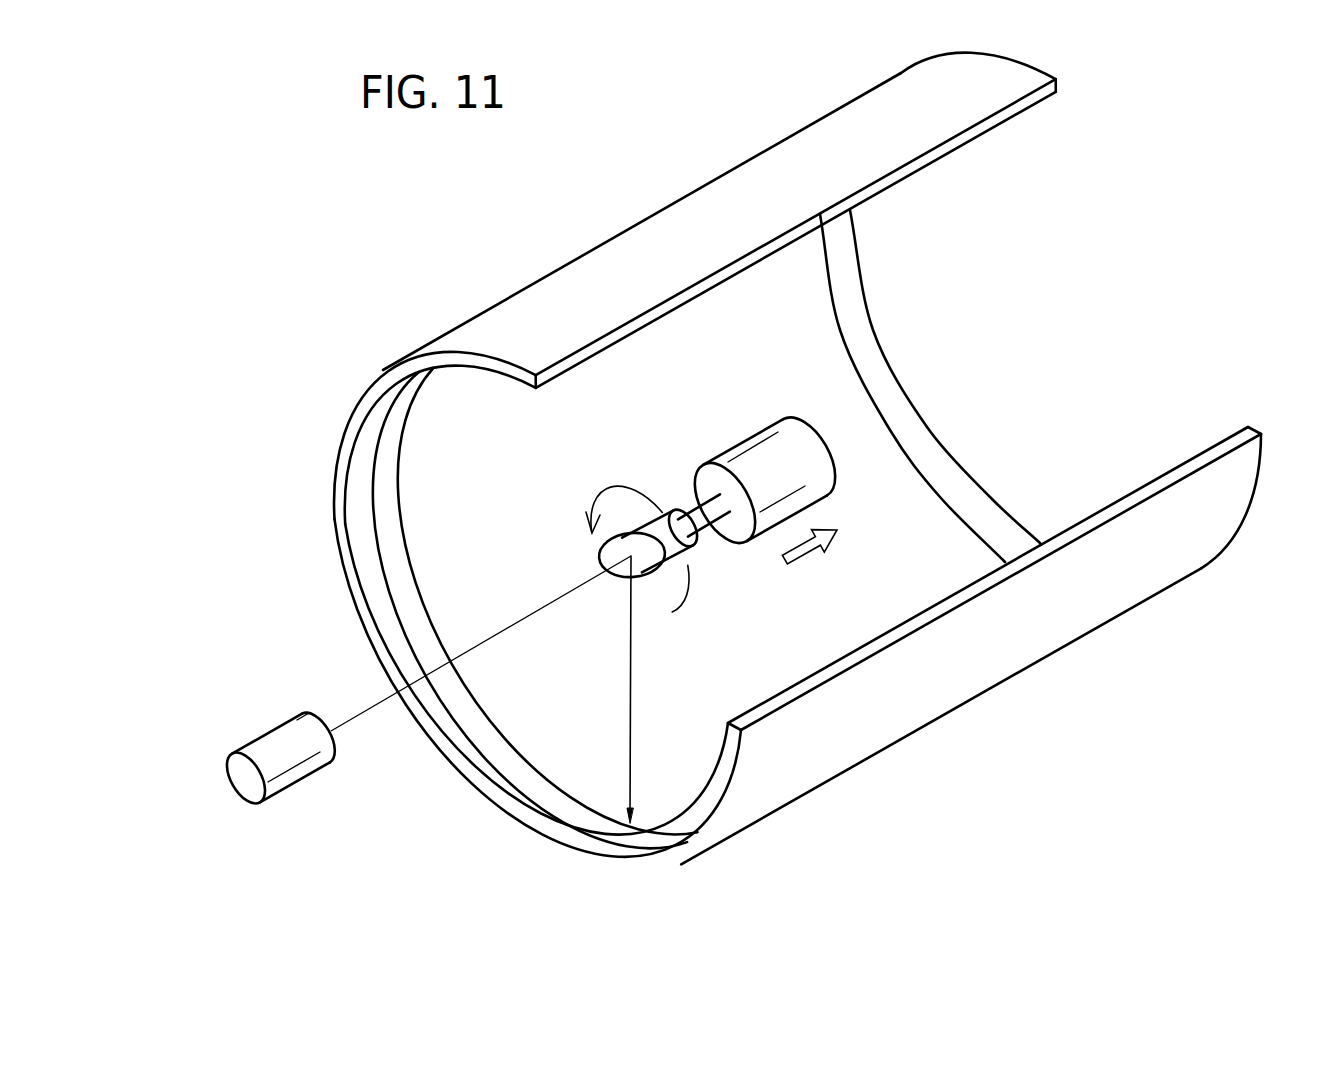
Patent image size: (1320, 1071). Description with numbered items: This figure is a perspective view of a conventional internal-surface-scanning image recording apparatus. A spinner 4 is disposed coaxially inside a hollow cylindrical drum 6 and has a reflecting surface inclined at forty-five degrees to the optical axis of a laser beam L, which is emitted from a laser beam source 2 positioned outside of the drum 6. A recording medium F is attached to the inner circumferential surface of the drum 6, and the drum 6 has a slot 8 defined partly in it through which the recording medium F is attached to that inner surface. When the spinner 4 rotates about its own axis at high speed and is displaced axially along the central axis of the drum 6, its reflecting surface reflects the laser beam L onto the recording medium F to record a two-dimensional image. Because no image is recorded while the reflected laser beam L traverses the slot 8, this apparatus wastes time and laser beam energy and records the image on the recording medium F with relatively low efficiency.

The laser beam source 2 is at (281, 740).
The spinner 4 is at (772, 447).
The hollow cylindrical drum 6 is at (1012, 648).
The slot 8 is at (695, 371).
The recording medium F is at (865, 458).
The laser beam L is at (339, 710).